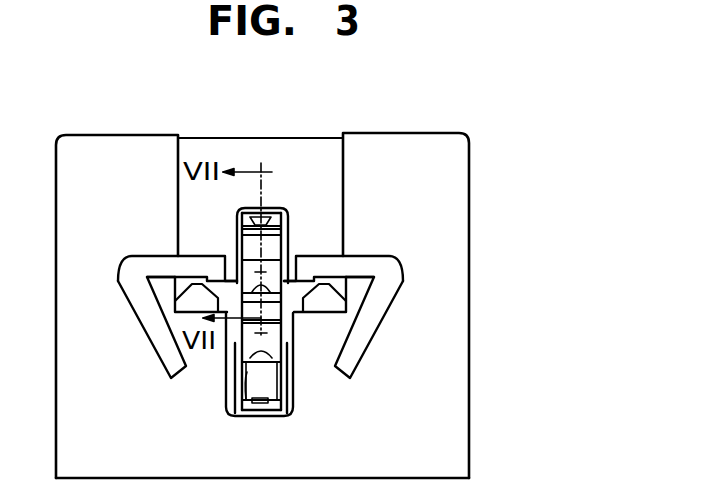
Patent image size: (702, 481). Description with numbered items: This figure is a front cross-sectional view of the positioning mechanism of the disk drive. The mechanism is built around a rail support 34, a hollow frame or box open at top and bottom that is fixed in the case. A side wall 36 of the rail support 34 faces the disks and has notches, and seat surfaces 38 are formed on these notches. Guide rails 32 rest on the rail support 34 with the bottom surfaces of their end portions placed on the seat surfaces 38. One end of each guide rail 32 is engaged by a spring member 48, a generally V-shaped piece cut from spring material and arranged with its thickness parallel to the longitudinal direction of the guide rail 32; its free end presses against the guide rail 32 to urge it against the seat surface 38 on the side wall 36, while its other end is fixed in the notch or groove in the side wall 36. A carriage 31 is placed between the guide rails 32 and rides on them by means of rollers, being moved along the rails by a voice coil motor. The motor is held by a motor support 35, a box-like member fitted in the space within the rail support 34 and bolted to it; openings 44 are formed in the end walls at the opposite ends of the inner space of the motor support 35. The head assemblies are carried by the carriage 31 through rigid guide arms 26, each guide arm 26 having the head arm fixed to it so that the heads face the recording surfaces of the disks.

The guide arm 26 is at (272, 412).
The carriage 31 is at (280, 357).
The guide rails 32 is at (177, 305).
The rail support 34 is at (467, 394).
The motor support 35 is at (225, 153).
The side wall 36 is at (440, 458).
The seat surfaces 38 is at (175, 308).
The openings 44 is at (247, 380).
The spring member 48 is at (127, 279).